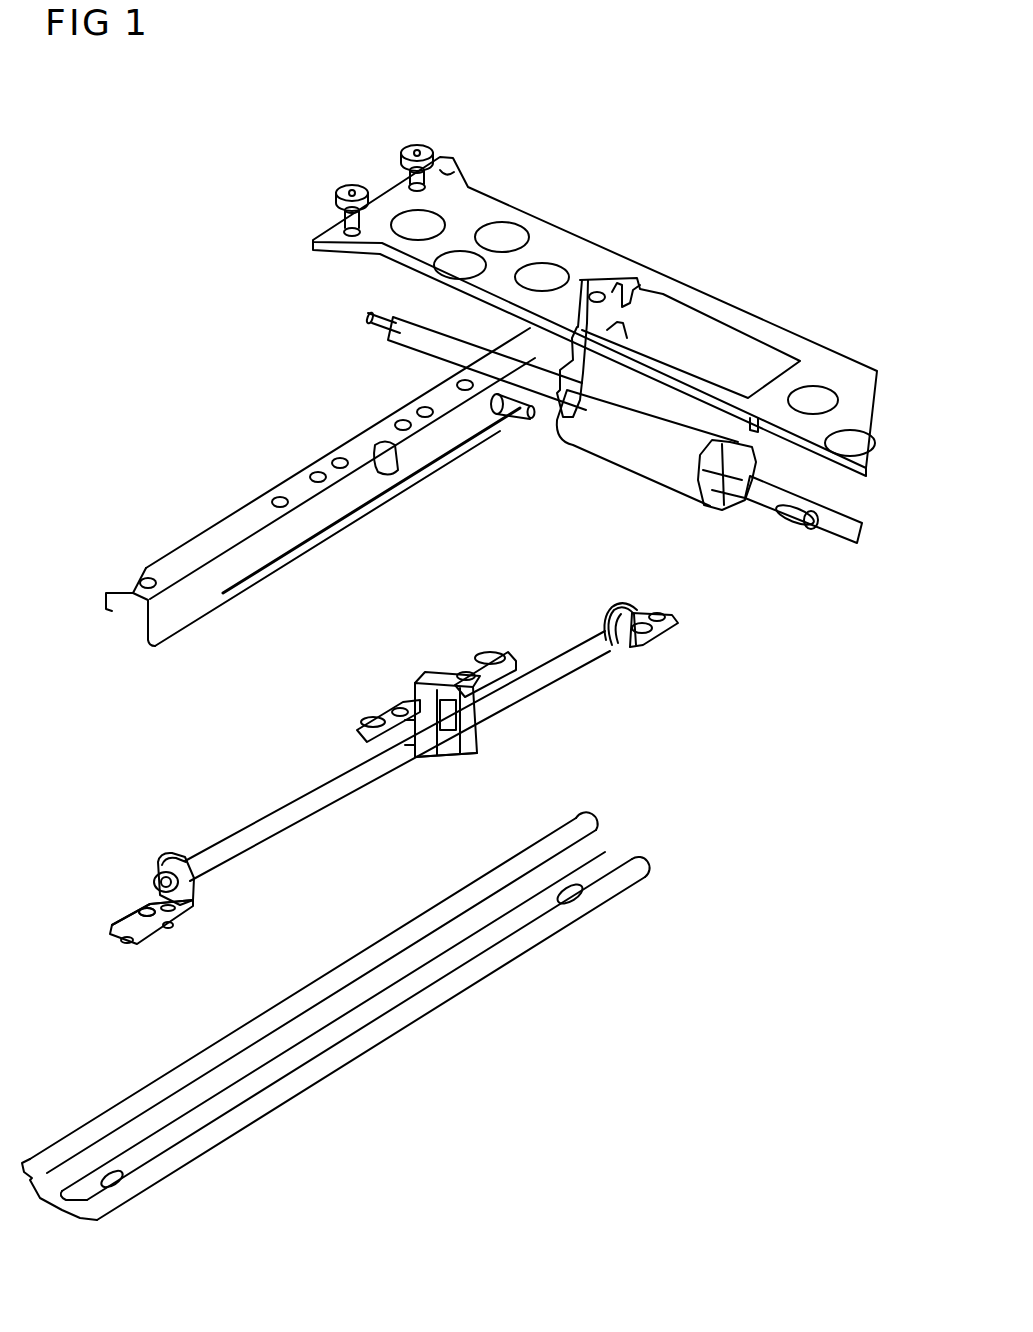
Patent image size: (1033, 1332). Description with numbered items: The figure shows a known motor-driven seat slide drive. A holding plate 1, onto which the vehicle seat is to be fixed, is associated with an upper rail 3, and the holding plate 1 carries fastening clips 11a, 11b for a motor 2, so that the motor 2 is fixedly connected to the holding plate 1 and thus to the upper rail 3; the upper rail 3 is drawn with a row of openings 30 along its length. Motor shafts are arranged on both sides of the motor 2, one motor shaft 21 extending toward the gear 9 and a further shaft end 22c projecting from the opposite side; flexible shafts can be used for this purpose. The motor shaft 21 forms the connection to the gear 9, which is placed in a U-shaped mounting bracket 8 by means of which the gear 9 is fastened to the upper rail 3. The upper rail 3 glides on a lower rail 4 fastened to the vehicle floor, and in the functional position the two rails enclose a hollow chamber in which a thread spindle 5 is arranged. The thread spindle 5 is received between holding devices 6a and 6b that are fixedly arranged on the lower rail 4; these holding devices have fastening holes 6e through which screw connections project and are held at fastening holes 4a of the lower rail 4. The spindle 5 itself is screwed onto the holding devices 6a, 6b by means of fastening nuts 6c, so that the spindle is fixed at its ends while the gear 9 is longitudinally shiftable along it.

The holding plate 1 is at (564, 246).
The fastening clip 11a is at (580, 300).
The fastening clip 11b is at (755, 425).
The motor shaft 21 is at (400, 335).
The upper rail 3 is at (383, 432).
The holes 30 is at (143, 577).
The motor 2 is at (650, 467).
The motor shaft 22c is at (838, 523).
The thread spindle 5 is at (267, 827).
The holding device 6a is at (618, 603).
The holding device 6b is at (152, 933).
The fastening nut 6c is at (600, 617).
The fastening hole 6e is at (130, 912).
The U-shaped mounting bracket 8 is at (447, 677).
The gear 9 is at (485, 723).
The lower rail 4 is at (549, 933).
The fastening hole 4a is at (576, 900).